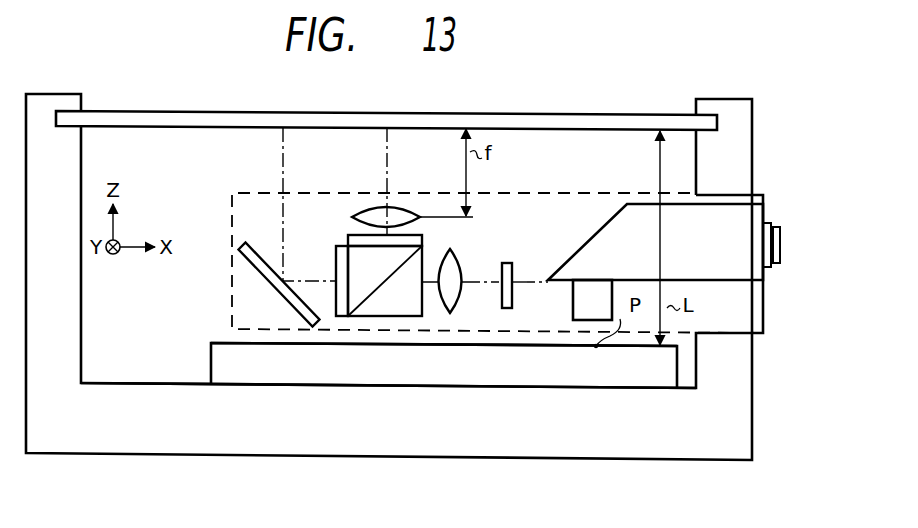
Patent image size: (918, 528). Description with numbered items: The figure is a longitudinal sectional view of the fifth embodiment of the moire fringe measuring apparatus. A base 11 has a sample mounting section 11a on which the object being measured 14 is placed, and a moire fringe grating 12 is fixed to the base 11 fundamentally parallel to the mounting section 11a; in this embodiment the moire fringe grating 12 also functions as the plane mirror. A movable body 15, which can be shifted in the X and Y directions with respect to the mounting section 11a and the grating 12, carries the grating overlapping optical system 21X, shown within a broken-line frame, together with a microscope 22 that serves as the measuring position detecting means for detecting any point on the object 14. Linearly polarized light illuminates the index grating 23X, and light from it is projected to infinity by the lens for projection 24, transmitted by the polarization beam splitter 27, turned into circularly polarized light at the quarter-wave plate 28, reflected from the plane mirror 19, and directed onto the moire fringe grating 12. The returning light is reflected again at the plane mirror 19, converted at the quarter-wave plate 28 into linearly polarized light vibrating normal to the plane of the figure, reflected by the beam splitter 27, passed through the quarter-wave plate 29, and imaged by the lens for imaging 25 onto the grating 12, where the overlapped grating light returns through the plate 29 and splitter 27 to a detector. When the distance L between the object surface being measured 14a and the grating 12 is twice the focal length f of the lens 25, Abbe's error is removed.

The base 11 is at (113, 440).
The sample mounting section 11a is at (160, 383).
The moire fringe grating 12 is at (658, 115).
The object being measured 14 is at (639, 377).
The object surface being measured 14a is at (218, 343).
The movable body 15 is at (766, 306).
The plane mirror 19 is at (262, 254).
The grating overlapping optical system 21X is at (258, 200).
The microscope 22 is at (590, 246).
The index grating 23X is at (511, 263).
The lens for projection 24 is at (460, 270).
The lens for imaging 25 is at (371, 206).
The polarization beam splitter 27 is at (420, 311).
The quarter-wave plate 28 is at (336, 263).
The quarter-wave plate 29 is at (412, 236).